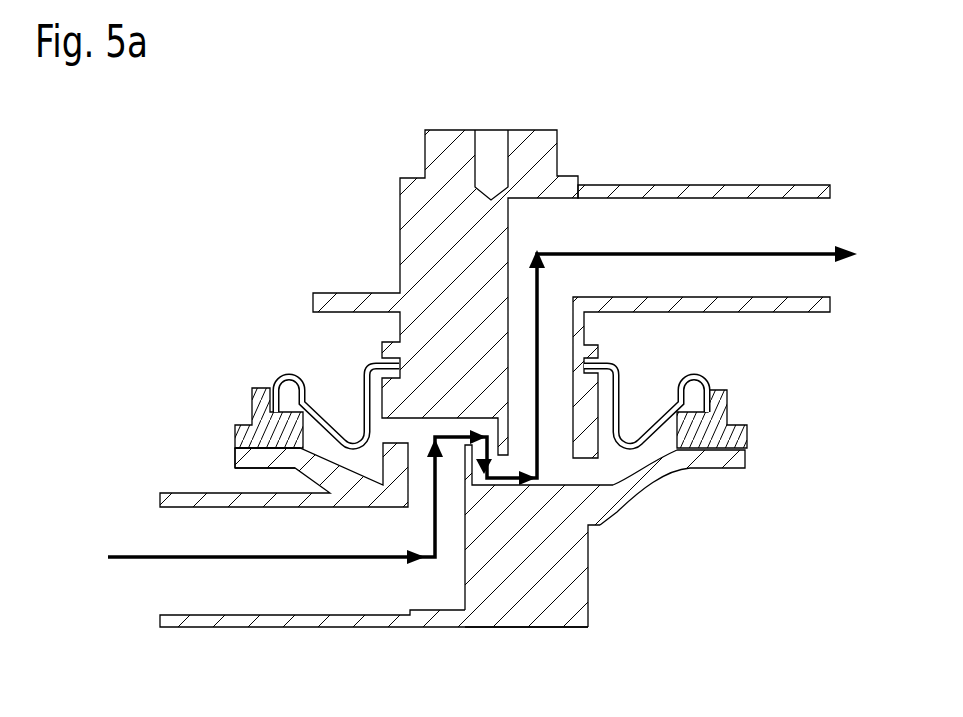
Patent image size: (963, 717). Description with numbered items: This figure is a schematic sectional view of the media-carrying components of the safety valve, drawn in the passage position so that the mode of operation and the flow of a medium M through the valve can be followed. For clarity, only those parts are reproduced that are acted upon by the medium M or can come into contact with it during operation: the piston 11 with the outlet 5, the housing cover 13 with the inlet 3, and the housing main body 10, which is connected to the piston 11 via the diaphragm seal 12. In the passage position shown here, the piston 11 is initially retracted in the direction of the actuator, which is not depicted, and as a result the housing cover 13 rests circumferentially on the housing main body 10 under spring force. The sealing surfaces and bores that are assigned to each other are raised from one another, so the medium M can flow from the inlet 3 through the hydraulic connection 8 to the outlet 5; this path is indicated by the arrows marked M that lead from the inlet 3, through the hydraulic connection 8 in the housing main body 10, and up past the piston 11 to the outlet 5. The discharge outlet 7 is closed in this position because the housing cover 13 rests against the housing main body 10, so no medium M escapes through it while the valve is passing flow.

The inlet 3 is at (150, 587).
The outlet 5 is at (820, 213).
The discharge outlet 7 is at (214, 446).
The hydraulic connection 8 is at (588, 527).
The housing main body 10 is at (262, 430).
The piston 11 is at (418, 232).
The diaphragm seal 12 is at (265, 378).
The housing cover 13 is at (235, 462).
The medium M is at (813, 258).